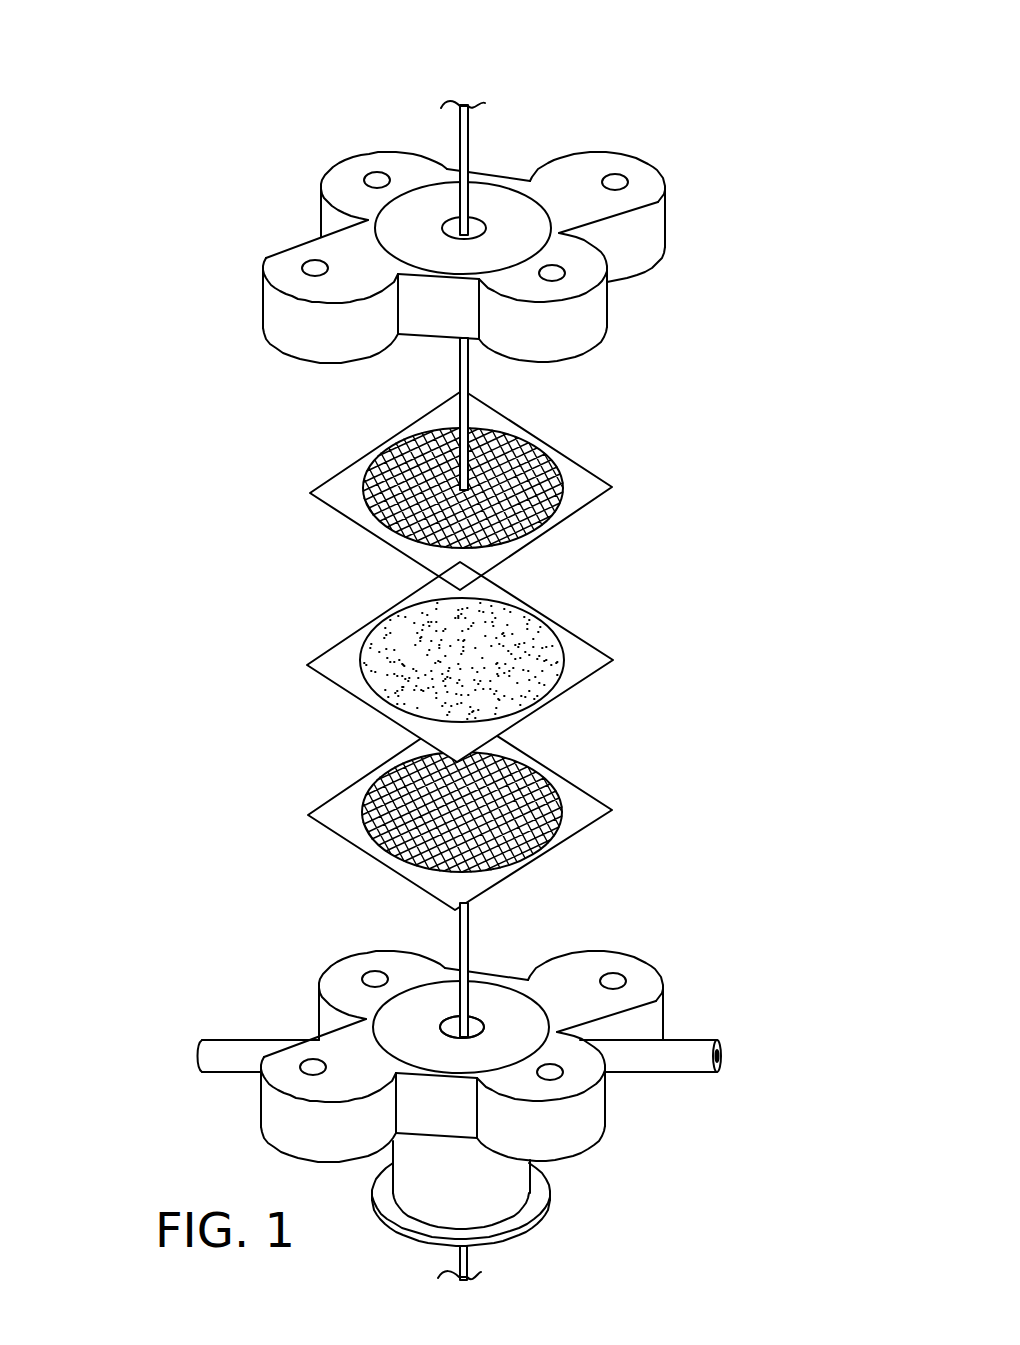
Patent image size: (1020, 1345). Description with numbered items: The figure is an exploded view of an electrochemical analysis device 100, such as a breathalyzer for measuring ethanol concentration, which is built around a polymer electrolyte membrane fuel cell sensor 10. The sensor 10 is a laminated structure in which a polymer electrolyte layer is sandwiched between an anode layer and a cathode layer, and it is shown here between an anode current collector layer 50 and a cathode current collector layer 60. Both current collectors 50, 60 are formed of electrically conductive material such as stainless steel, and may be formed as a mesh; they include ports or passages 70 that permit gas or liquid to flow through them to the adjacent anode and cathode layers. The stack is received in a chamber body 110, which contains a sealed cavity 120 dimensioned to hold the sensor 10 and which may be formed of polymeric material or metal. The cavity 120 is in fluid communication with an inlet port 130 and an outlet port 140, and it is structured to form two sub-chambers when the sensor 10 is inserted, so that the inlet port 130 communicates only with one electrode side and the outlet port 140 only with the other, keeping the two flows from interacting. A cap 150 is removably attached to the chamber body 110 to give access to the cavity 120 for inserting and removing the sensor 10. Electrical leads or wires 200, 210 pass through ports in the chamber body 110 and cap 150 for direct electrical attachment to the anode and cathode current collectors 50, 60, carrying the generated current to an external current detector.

The electrochemical analysis device 100 is at (150, 111).
The electrical lead 200 is at (467, 133).
The cap 150 is at (643, 190).
The ports or passages 70 is at (530, 442).
The cathode current collector layer 60 is at (545, 458).
The sensor 10 is at (590, 617).
The anode current collector layer 50 is at (553, 797).
The sealed cavity 120 is at (440, 1005).
The outlet port 140 is at (233, 1040).
The inlet port 130 is at (700, 1040).
The chamber body 110 is at (590, 1127).
The electrical lead 210 is at (467, 1256).